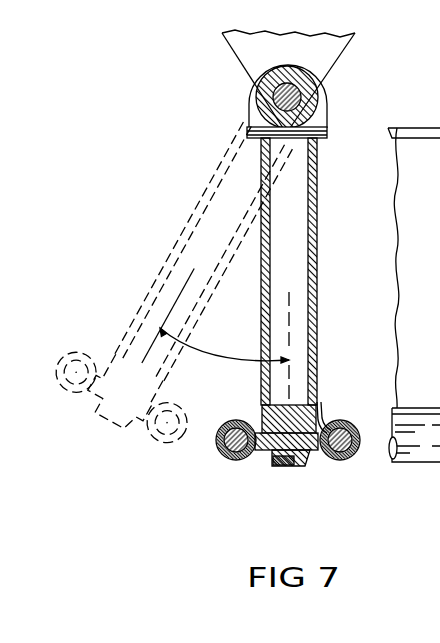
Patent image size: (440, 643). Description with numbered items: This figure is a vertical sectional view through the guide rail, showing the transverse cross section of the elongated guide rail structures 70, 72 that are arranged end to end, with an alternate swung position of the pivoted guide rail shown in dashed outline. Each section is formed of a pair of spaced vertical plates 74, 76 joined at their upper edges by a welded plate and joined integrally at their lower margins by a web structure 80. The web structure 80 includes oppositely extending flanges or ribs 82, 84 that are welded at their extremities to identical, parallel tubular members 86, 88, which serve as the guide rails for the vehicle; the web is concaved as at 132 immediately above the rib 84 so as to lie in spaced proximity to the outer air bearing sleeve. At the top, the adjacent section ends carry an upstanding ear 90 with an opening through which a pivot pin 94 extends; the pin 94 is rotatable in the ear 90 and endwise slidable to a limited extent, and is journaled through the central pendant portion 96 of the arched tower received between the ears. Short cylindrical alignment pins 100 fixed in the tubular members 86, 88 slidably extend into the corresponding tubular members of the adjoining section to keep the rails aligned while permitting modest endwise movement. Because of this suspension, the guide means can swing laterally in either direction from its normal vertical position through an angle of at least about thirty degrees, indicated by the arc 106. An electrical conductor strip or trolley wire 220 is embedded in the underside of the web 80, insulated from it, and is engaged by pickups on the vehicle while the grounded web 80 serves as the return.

The guide rail structure 70 is at (398, 270).
The guide rail structure 72 is at (414, 116).
The vertical plate 74 is at (185, 232).
The vertical plate 76 is at (318, 207).
The web structure 80 is at (288, 465).
The flange or rib 82 is at (267, 428).
The flange or rib 84 is at (313, 447).
The tubular member 86 is at (233, 458).
The tubular member 88 is at (340, 460).
The upstanding ear 90 is at (318, 97).
The pivot pin 94 is at (287, 97).
The central pendant portion 96 is at (333, 47).
The alignment pin 100 is at (237, 422).
The arc 106 is at (220, 352).
The concaved portion 132 is at (325, 415).
The electrical conductor strip 220 is at (273, 462).